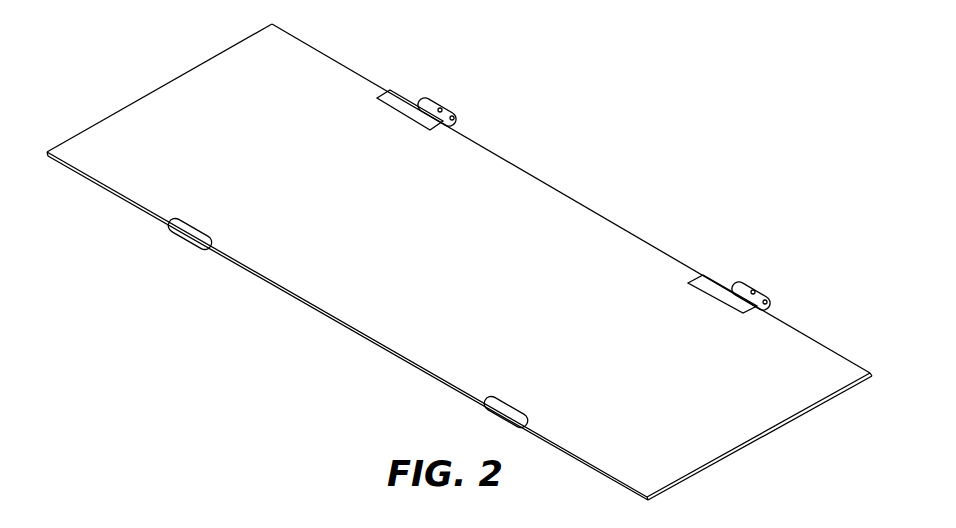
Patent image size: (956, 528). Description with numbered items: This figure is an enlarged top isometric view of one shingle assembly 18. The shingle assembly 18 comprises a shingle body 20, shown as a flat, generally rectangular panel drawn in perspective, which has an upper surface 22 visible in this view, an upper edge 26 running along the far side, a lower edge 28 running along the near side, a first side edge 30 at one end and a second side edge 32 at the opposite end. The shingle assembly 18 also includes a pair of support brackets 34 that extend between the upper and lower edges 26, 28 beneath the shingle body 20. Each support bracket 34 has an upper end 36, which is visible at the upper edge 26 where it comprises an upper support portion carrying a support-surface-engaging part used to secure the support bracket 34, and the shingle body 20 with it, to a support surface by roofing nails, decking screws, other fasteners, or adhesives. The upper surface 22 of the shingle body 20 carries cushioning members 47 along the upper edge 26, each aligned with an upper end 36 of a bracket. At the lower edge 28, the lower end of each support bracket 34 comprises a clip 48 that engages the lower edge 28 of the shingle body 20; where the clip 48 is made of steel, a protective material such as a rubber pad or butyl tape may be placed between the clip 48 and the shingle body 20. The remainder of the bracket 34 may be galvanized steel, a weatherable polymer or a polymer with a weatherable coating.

The shingle assembly 18 is at (459, 262).
The shingle body 20 is at (459, 262).
The upper surface 22 is at (485, 268).
The upper edge 26 is at (618, 225).
The lower edge 28 is at (318, 310).
The first side edge 30 is at (755, 441).
The second side edge 32 is at (172, 78).
The support bracket 34 is at (460, 86).
The upper end 36 is at (428, 98).
The cushioning member 47 is at (708, 288).
The clip 48 is at (190, 231).